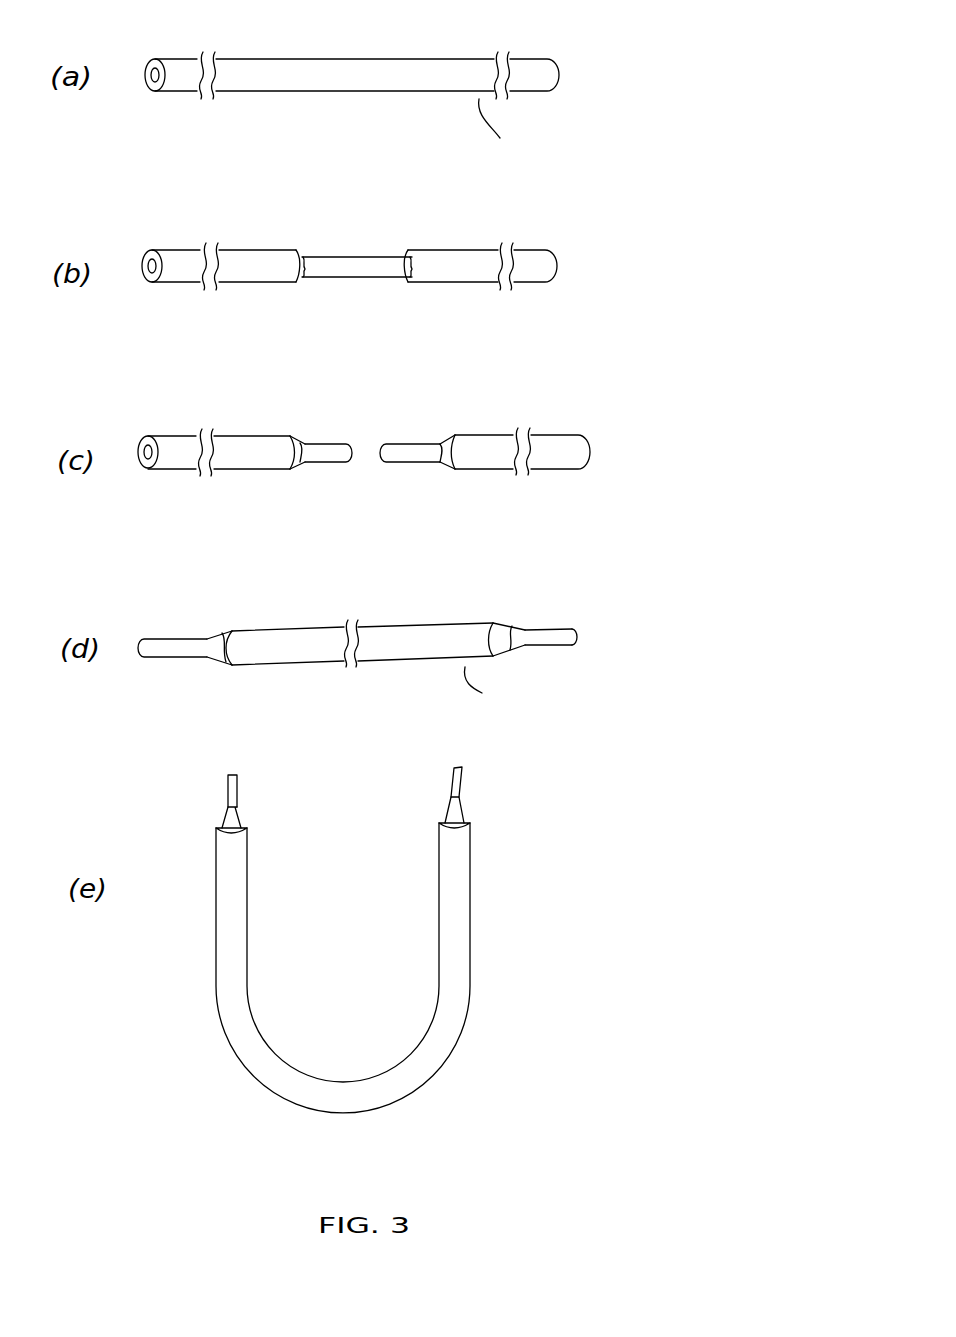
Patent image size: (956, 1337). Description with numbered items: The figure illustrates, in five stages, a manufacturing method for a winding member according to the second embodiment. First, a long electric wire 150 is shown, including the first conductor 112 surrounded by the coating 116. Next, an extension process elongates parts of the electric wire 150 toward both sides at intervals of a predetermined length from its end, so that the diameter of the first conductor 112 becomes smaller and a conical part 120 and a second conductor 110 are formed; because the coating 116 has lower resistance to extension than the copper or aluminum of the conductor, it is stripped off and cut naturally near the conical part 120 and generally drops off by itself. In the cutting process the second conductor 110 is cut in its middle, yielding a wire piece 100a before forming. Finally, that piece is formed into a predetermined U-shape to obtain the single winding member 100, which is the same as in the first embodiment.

The electric wire 150 is at (477, 105).
The first conductor 112 is at (149, 80).
The coating 116 is at (157, 89).
The conical part 120 is at (304, 283).
The second conductor 110 is at (334, 443).
The electric wire after machining 100a is at (458, 622).
The winding member 100 is at (470, 931).